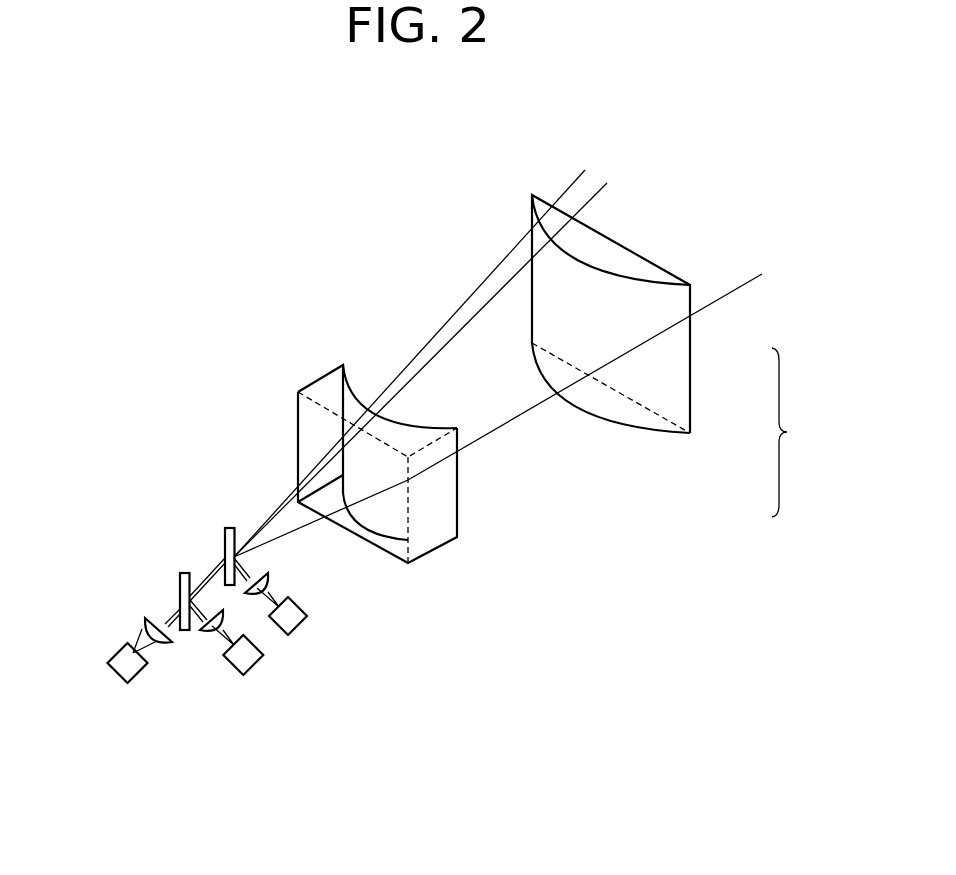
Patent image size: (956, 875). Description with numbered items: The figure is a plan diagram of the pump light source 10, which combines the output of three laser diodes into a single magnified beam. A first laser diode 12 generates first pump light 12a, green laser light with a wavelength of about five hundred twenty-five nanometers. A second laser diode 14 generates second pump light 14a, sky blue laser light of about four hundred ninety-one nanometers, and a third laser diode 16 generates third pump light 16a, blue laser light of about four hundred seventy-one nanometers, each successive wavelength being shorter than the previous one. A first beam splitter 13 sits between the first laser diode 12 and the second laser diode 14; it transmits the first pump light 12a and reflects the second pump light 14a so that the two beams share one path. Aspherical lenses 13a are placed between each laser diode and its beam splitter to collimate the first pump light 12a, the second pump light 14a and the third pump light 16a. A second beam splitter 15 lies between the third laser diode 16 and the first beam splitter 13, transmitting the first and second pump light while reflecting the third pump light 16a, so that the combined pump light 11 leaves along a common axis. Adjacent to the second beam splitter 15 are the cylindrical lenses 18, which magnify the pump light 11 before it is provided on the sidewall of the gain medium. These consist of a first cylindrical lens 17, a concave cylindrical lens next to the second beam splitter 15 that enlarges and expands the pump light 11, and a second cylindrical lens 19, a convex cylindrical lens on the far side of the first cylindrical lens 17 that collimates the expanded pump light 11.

The pump light source 10 is at (197, 308).
The pump light 11 is at (736, 289).
The first laser diode 12 is at (122, 668).
The first pump light 12a is at (177, 627).
The first beam splitter 13 is at (185, 572).
The aspherical lens 13a is at (143, 623).
The second laser diode 14 is at (248, 665).
The second pump light 14a is at (196, 629).
The second beam splitter 15 is at (230, 528).
The third laser diode 16 is at (295, 622).
The third pump light 16a is at (237, 562).
The first cylindrical lens 17 is at (457, 505).
The cylindrical lenses 18 is at (794, 432).
The second cylindrical lens 19 is at (690, 358).